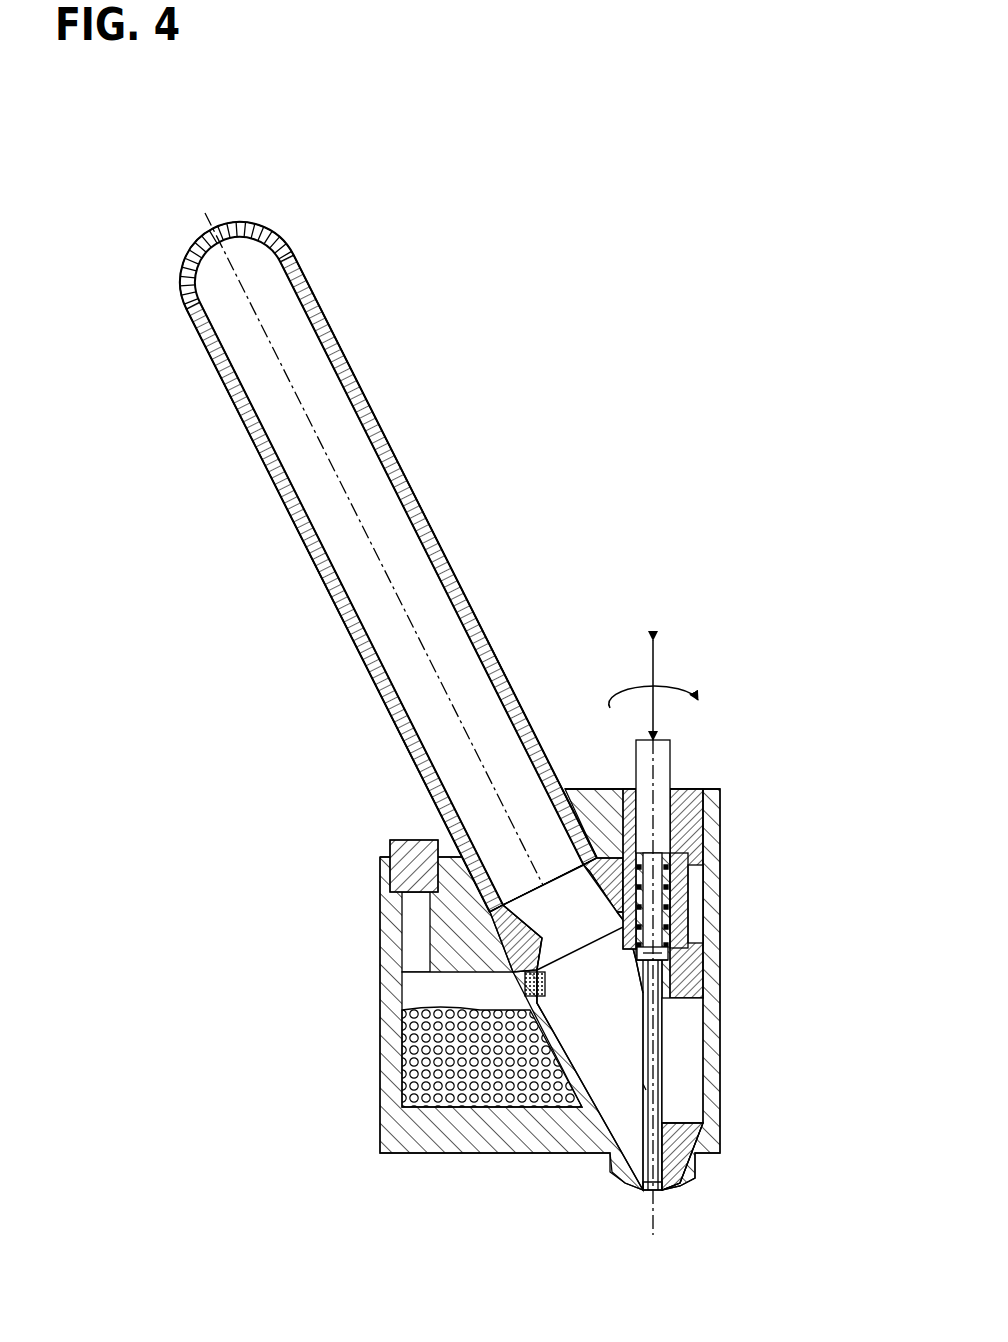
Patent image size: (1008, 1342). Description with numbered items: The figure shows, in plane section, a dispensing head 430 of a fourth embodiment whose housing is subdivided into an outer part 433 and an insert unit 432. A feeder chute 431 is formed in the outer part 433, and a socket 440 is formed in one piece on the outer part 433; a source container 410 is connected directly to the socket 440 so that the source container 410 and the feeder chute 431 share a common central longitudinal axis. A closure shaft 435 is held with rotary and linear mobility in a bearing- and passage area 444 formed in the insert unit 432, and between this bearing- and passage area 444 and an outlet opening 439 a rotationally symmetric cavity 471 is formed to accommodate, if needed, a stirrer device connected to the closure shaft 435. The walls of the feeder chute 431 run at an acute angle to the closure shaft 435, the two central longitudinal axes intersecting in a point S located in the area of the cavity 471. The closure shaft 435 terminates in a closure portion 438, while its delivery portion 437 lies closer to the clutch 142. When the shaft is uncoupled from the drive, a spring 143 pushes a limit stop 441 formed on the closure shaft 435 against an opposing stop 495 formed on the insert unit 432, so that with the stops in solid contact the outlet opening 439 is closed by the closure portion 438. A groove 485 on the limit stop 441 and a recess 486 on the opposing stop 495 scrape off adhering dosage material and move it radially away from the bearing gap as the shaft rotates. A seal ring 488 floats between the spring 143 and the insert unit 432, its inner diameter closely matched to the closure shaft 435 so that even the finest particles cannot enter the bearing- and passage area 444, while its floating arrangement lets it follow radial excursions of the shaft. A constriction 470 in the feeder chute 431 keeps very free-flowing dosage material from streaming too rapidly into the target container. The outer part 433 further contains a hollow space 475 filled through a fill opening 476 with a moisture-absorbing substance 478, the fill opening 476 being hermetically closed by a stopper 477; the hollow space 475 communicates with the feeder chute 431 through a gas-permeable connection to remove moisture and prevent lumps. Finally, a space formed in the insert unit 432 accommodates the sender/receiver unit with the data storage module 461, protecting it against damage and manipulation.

The dispensing head 430 is at (663, 496).
The source container 410 is at (318, 472).
The clutch 142 is at (656, 765).
The socket 440 is at (600, 818).
The insert unit 432 is at (690, 808).
The bearing- and passage area 444 is at (688, 848).
The spring 143 is at (690, 847).
The data storage module 461 is at (697, 900).
The seal ring 488 is at (672, 930).
The opposing stop 495 is at (667, 930).
The limit stop 441 is at (660, 947).
The groove 485 is at (652, 955).
The outer part 433 is at (655, 1058).
The closure shaft 435 is at (680, 1093).
The rotationally symmetric cavity 471 is at (700, 1112).
The delivery portion 437 is at (670, 1152).
The closure portion 438 is at (654, 1195).
The outlet opening 439 is at (665, 1192).
The feeder chute 431 is at (622, 1087).
The intersection point S is at (606, 1152).
The recess 486 is at (628, 930).
The stopper 477 is at (458, 860).
The constriction 470 is at (413, 888).
The fill opening 476 is at (415, 935).
The hollow space 475 is at (435, 990).
The moisture-absorbing substance 478 is at (410, 1040).